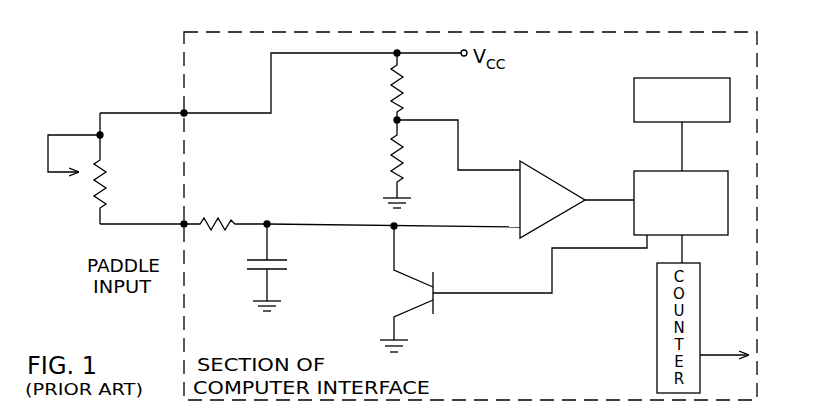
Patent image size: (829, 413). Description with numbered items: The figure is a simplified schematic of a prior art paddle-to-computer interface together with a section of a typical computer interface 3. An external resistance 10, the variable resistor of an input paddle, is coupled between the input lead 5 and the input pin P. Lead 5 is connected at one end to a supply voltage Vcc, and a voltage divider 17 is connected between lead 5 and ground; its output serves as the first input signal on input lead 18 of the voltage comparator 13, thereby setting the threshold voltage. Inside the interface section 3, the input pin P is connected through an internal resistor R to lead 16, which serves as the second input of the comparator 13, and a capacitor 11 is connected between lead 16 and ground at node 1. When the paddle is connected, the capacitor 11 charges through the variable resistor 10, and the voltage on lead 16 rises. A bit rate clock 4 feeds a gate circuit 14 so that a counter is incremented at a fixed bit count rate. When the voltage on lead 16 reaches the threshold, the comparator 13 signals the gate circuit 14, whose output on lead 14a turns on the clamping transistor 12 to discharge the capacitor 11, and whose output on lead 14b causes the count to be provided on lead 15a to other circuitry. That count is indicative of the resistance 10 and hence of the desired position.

The node 1 is at (273, 217).
The computer interface section 3 is at (566, 66).
The bit rate clock 4 is at (694, 78).
The lead 5 is at (219, 101).
The external resistance 10 is at (105, 157).
The capacitor 11 is at (292, 240).
The clamping transistor 12 is at (408, 290).
The voltage comparator 13 is at (539, 164).
The gate circuit 14 is at (651, 169).
The lead 14a is at (605, 243).
The lead 14b is at (690, 250).
The lead 15a is at (741, 344).
The lead 16 is at (470, 232).
The voltage divider 17 is at (390, 119).
The input lead 18 is at (488, 168).
The input pin P is at (189, 213).
The internal resistor R is at (221, 223).